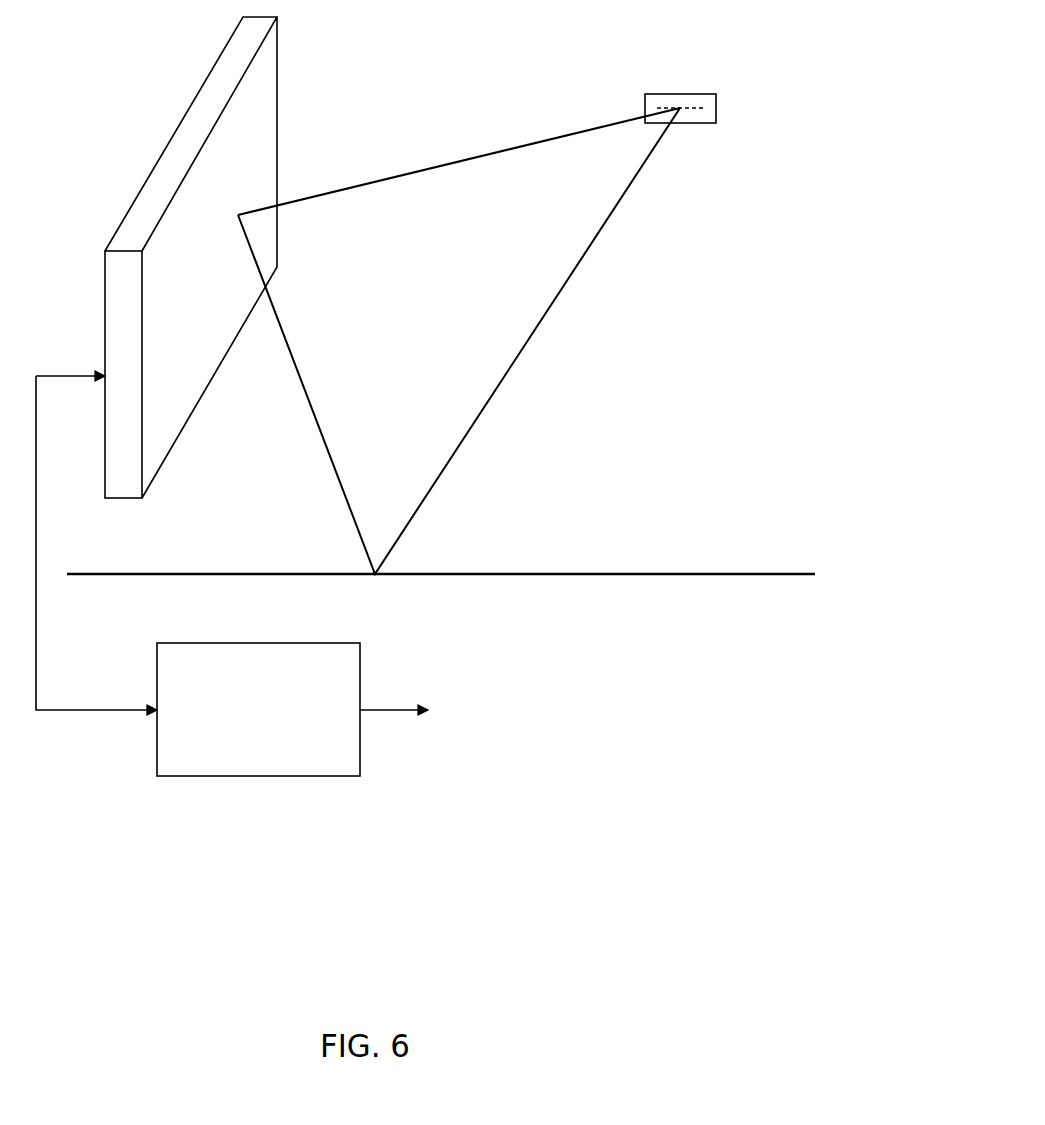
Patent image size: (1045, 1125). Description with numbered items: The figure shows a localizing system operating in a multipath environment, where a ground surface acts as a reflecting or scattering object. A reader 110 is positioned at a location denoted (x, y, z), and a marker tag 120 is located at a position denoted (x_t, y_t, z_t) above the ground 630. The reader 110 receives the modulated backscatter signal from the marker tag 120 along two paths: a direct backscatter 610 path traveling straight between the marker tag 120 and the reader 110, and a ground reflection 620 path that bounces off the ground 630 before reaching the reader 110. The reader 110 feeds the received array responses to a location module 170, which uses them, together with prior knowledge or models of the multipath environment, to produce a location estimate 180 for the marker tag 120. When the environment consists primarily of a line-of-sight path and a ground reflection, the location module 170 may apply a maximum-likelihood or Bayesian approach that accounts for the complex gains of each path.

The reader 110 is at (215, 63).
The marker tag 120 is at (680, 94).
The direct backscatter 610 is at (457, 162).
The ground reflection 620 is at (447, 465).
The ground 630 is at (698, 574).
The location module 170 is at (278, 747).
The location estimate 180 is at (536, 710).